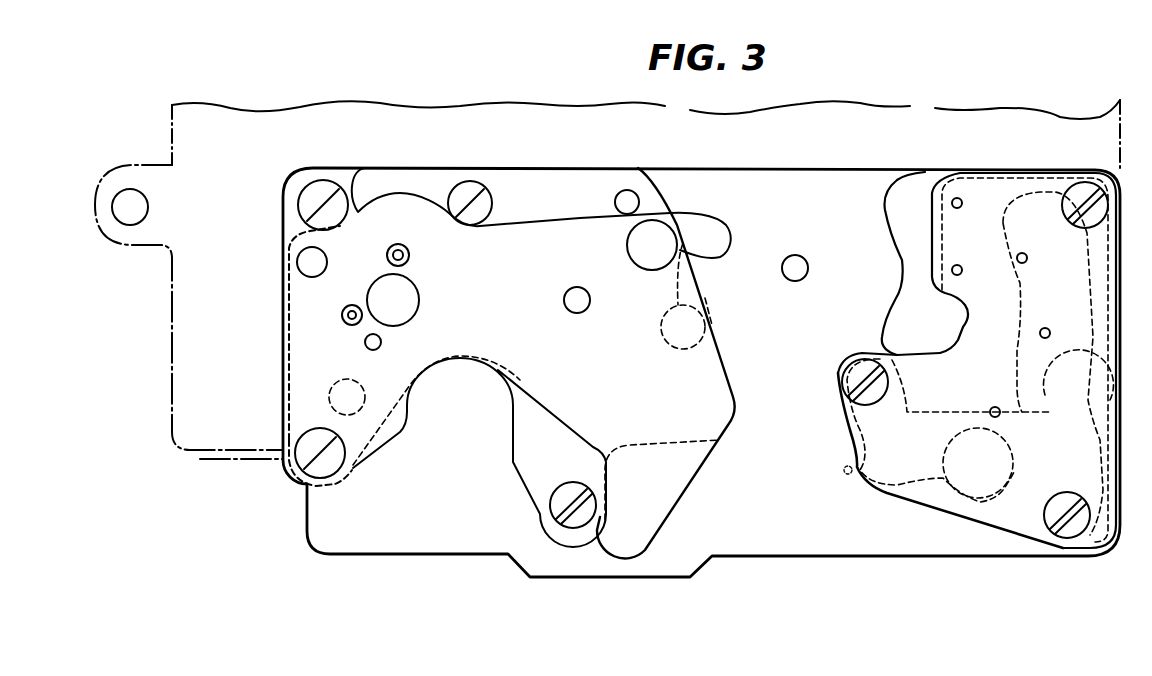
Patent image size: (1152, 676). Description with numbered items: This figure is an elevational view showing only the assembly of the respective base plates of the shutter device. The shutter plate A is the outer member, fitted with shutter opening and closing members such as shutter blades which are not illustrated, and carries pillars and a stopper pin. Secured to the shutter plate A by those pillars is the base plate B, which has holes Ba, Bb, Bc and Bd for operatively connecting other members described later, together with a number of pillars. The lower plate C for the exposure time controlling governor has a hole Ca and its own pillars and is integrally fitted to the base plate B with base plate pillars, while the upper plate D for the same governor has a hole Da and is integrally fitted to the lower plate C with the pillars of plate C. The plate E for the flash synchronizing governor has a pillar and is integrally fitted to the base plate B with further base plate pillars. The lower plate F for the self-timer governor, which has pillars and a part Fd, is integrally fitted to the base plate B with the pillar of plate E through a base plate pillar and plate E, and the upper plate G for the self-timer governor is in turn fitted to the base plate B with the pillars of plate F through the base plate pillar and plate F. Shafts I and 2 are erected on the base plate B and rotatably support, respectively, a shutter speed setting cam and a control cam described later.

The shutter plate A is at (248, 425).
The base plate B is at (445, 465).
The hole Ba is at (716, 258).
The hole Bb is at (680, 349).
The hole Bc is at (1022, 412).
The hole Bd is at (1002, 495).
The lower plate for exposure time controlling governor C is at (543, 473).
The hole Ca is at (353, 415).
The upper plate for exposure time controlling governor D is at (623, 513).
The hole Da is at (393, 326).
The plate for flash synchronizing governor E is at (925, 325).
The lower plate for self-timer governor F is at (963, 322).
The part Fd is at (848, 472).
The upper plate for self-timer governor G is at (905, 492).
The shaft I is at (575, 313).
The shaft 2 is at (794, 281).